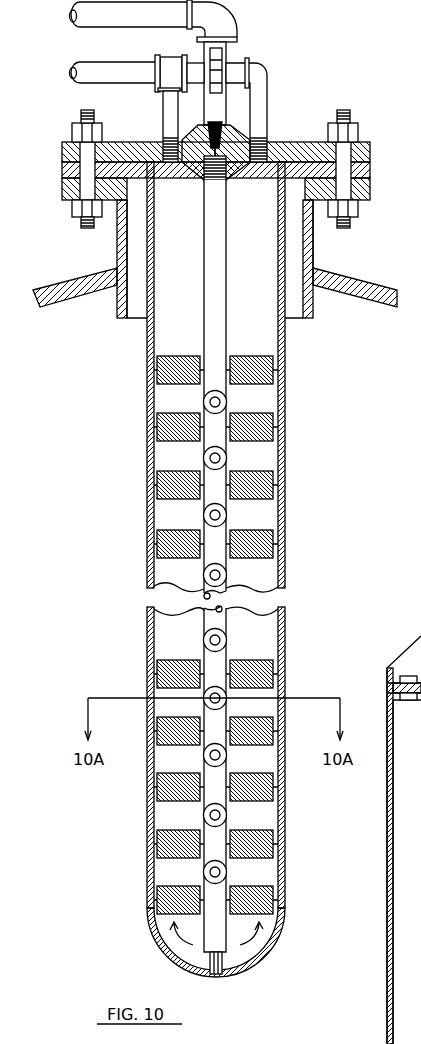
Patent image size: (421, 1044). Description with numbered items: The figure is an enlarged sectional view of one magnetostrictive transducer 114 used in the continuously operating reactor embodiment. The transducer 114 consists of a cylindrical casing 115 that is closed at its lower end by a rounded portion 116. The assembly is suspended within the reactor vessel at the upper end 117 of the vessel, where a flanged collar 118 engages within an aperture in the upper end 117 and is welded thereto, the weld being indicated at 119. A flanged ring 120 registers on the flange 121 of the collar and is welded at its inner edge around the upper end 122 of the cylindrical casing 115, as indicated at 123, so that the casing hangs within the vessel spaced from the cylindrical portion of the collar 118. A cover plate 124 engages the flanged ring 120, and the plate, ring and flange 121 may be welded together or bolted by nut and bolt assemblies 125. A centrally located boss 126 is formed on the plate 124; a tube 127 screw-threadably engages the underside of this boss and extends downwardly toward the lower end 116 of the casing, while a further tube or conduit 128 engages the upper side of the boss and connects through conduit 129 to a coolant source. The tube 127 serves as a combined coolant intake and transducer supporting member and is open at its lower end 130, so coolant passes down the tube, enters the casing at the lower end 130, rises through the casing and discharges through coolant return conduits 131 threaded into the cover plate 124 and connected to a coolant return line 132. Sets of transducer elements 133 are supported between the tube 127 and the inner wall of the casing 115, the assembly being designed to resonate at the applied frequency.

The magnetostrictive transducer 114 is at (143, 360).
The cylindrical casing 115 is at (285, 372).
The rounded portion 116 is at (258, 958).
The upper end of the vessel 117 is at (330, 267).
The flanged collar 118 is at (312, 238).
The weld 119 is at (117, 262).
The flanged ring 120 is at (372, 172).
The flange of the collar 121 is at (370, 190).
The upper end of the cylindrical casing 122 is at (273, 167).
The weld 123 is at (165, 165).
The cover plate 124 is at (370, 150).
The nut and bolt assemblies 125 is at (92, 133).
The boss 126 is at (200, 133).
The tube 127 is at (215, 242).
The tube or conduit 128 is at (217, 107).
The conduit 129 is at (109, 8).
The open lower end of the tube 130 is at (177, 957).
The coolant return conduits 131 is at (170, 100).
The coolant return line 132 is at (88, 77).
The transducer elements 133 is at (250, 430).